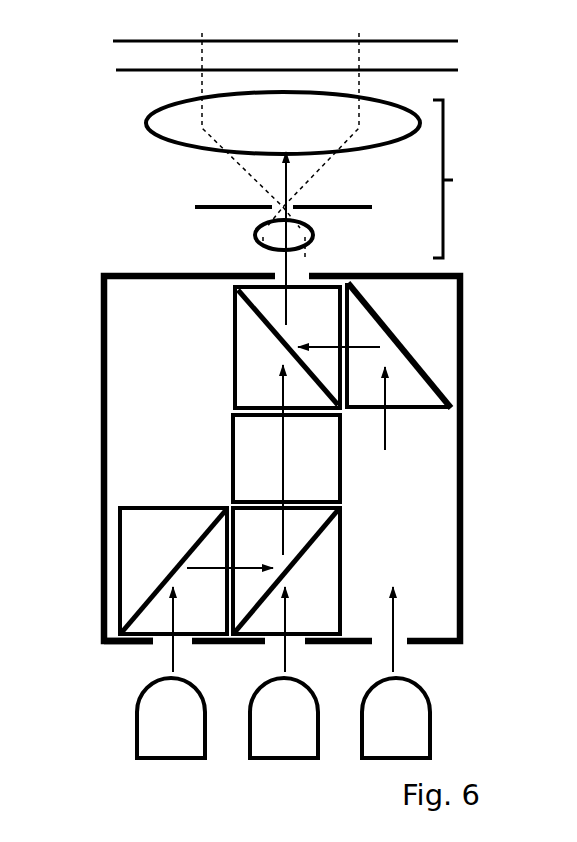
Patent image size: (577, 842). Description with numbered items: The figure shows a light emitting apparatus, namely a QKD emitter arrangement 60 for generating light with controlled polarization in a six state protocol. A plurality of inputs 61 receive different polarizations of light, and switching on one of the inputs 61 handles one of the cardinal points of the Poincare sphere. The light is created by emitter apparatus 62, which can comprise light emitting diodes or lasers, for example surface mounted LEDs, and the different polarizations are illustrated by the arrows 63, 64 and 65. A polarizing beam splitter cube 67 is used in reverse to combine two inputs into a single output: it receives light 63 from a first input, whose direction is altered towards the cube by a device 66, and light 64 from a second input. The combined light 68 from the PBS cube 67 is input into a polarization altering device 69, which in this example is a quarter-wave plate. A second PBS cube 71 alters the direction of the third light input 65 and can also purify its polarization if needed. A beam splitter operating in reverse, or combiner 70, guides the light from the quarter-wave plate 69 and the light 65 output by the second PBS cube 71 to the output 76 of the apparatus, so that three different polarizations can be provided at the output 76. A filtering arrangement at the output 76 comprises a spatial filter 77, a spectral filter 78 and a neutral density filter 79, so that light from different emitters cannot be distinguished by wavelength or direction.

The arrangement 60 is at (135, 312).
The inputs 61 is at (160, 645).
The emitter apparatus 62 is at (160, 718).
The light from the first input 63 is at (206, 636).
The light from the second input 64 is at (318, 636).
The third light input 65 is at (428, 636).
The device for altering the direction of light 66 is at (158, 558).
The polarizing beam splitter cube 67 is at (323, 582).
The light from PBS 68 is at (282, 523).
The polarization altering device 69 is at (230, 437).
The combiner 70 is at (243, 367).
The second PBS cube 71 is at (430, 350).
The output 76 is at (276, 278).
The spatial filter 77 is at (328, 179).
The spectral filter 78 is at (313, 81).
The neutral density filter 79 is at (312, 40).